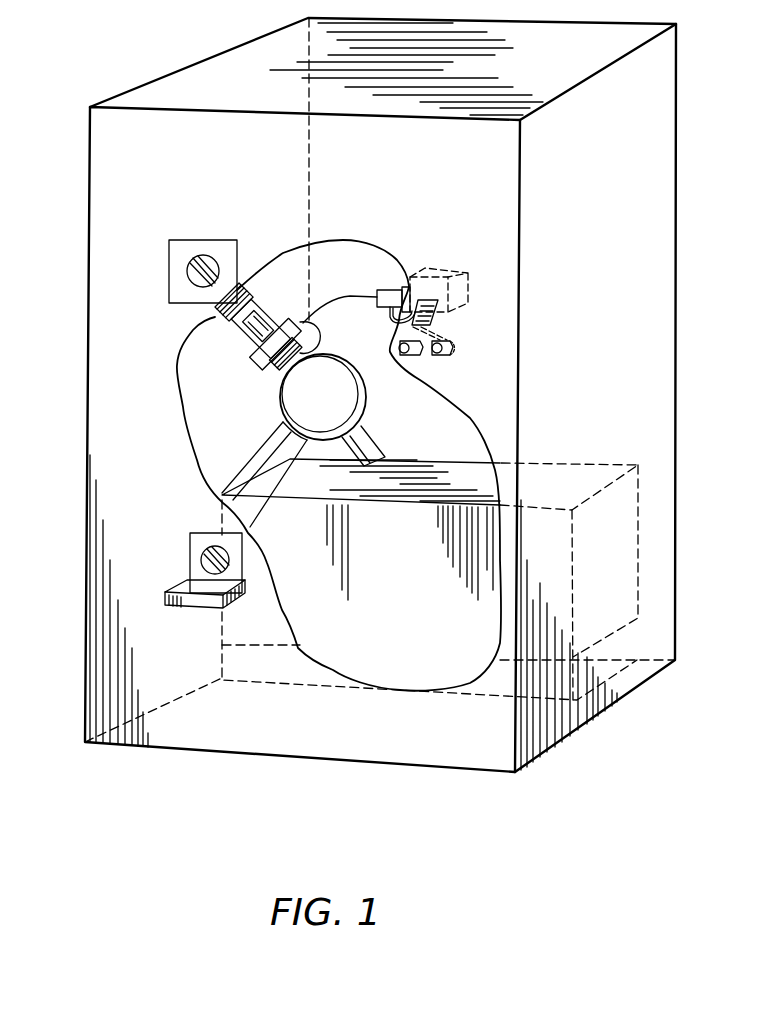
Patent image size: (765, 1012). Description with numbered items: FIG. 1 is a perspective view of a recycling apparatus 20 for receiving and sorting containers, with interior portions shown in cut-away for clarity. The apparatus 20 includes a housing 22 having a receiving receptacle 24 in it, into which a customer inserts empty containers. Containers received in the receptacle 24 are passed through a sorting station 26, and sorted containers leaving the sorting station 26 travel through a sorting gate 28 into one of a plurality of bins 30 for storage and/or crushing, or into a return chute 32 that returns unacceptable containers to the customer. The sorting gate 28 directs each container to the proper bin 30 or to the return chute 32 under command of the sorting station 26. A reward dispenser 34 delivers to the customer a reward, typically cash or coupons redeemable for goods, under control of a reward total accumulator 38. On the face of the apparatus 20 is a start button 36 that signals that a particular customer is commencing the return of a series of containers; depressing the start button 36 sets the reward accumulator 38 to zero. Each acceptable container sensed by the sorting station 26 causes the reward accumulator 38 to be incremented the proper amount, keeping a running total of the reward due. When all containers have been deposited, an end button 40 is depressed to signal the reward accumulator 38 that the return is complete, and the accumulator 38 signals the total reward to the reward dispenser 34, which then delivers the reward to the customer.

The recycling apparatus 20 is at (166, 72).
The housing 22 is at (88, 193).
The receiving receptacle 24 is at (188, 275).
The sorting station 26 is at (273, 322).
The sorting gate 28 is at (279, 409).
The bins 30 is at (437, 464).
The return chute 32 is at (200, 562).
The reward dispenser 34 is at (443, 262).
The start button 36 is at (400, 365).
The reward total accumulator 38 is at (392, 288).
The end button 40 is at (433, 357).